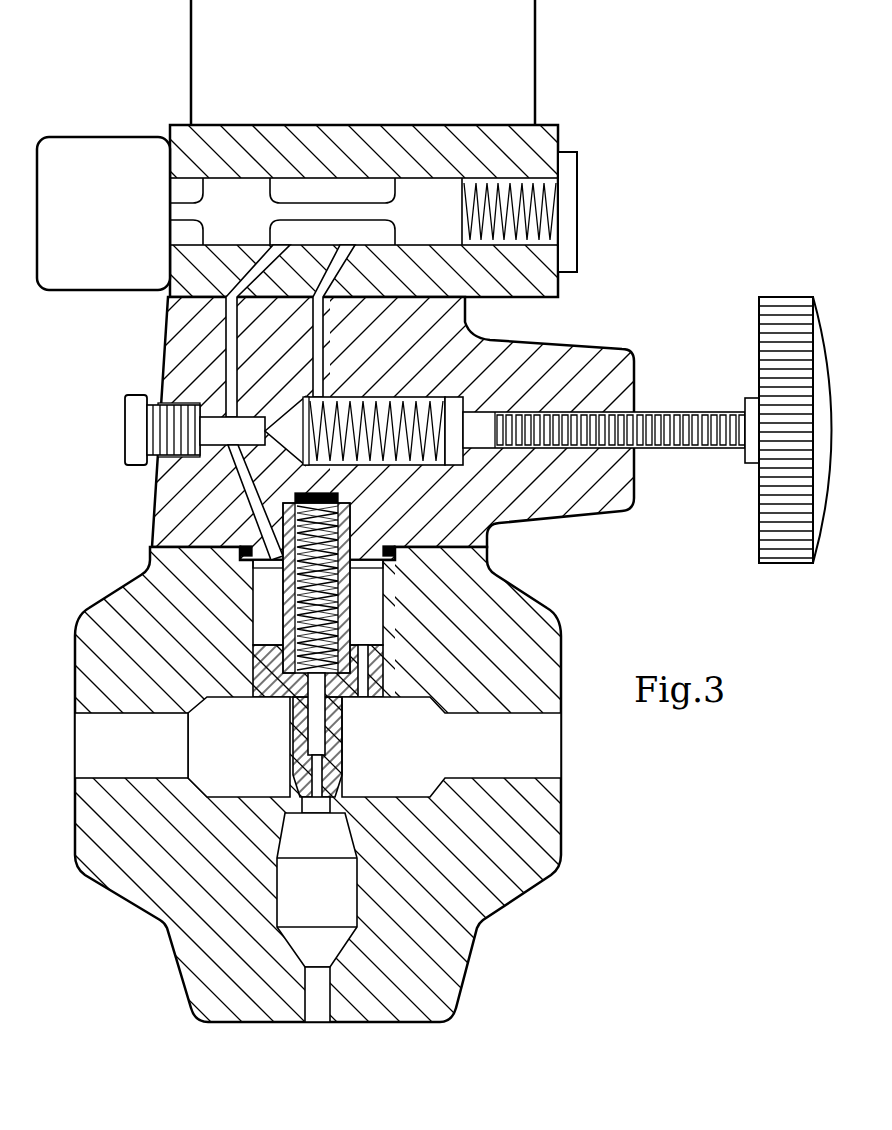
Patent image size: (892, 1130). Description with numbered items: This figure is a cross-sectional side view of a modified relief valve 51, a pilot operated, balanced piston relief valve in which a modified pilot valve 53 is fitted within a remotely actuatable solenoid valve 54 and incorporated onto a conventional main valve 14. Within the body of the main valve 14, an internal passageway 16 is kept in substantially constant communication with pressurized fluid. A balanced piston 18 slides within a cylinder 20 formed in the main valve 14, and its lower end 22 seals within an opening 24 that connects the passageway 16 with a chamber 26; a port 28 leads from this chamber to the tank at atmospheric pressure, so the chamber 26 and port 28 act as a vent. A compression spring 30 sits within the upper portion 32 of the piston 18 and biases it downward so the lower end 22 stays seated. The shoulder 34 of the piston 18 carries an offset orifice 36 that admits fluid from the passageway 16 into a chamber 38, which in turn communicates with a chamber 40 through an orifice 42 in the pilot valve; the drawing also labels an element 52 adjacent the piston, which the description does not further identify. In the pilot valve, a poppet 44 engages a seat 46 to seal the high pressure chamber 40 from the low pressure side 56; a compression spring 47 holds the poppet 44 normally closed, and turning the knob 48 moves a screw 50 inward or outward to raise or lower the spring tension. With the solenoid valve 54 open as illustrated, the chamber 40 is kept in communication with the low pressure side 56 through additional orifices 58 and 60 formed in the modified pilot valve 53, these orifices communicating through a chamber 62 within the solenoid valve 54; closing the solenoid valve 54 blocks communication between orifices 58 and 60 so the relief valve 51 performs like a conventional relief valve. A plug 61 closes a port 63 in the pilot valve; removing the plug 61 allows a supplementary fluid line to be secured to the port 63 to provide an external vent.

The main valve 14 is at (548, 608).
The internal passageway 16 is at (113, 754).
The balanced piston 18 is at (328, 746).
The cylinder 20 is at (368, 612).
The lower end 22 is at (326, 782).
The opening 24 is at (300, 797).
The chamber 26 is at (306, 901).
The port 28 is at (317, 1022).
The compression spring 30 is at (322, 578).
The upper portion 32 is at (342, 518).
The shoulder 34 is at (272, 708).
The offset orifice 36 is at (363, 695).
The chamber 38 is at (262, 580).
The chamber 40 is at (220, 425).
The orifice 42 is at (248, 512).
The poppet 44 is at (287, 430).
The seat 46 is at (303, 425).
The compression spring 47 is at (450, 408).
The knob 48 is at (783, 298).
The screw 50 is at (705, 412).
The modified relief valve 51 is at (555, 935).
The piston 52 is at (296, 628).
The modified pilot valve 53 is at (618, 348).
The solenoid valve 54 is at (557, 127).
The low pressure side 56 is at (383, 405).
The orifice 58 is at (226, 320).
The orifice 60 is at (320, 332).
The plug 61 is at (125, 432).
The chamber 62 is at (368, 230).
The port 63 is at (178, 400).